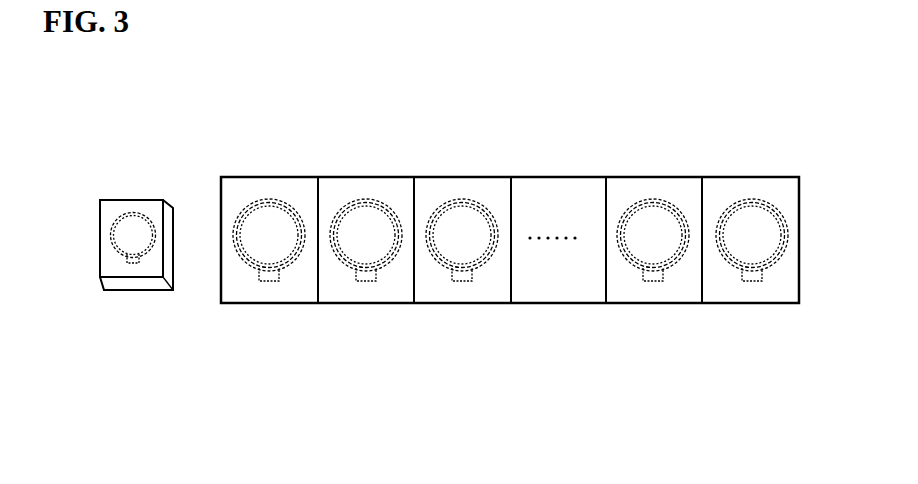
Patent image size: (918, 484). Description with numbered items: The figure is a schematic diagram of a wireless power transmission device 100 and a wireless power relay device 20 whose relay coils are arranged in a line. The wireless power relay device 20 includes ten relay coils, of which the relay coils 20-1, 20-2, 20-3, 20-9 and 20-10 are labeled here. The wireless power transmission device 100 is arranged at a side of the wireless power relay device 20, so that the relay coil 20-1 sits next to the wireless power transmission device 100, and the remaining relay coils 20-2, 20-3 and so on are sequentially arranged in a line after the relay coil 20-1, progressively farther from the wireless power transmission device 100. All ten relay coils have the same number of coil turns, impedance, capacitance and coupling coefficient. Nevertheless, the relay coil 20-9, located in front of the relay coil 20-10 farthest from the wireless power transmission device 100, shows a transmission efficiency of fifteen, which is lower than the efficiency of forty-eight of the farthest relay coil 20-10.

The wireless power transmission device 100 is at (135, 291).
The wireless power relay device 20 is at (246, 177).
The relay coil 20-1 is at (275, 282).
The relay coil 20-2 is at (372, 282).
The relay coil 20-3 is at (468, 282).
The relay coil 20-9 is at (659, 282).
The relay coil 20-10 is at (758, 282).